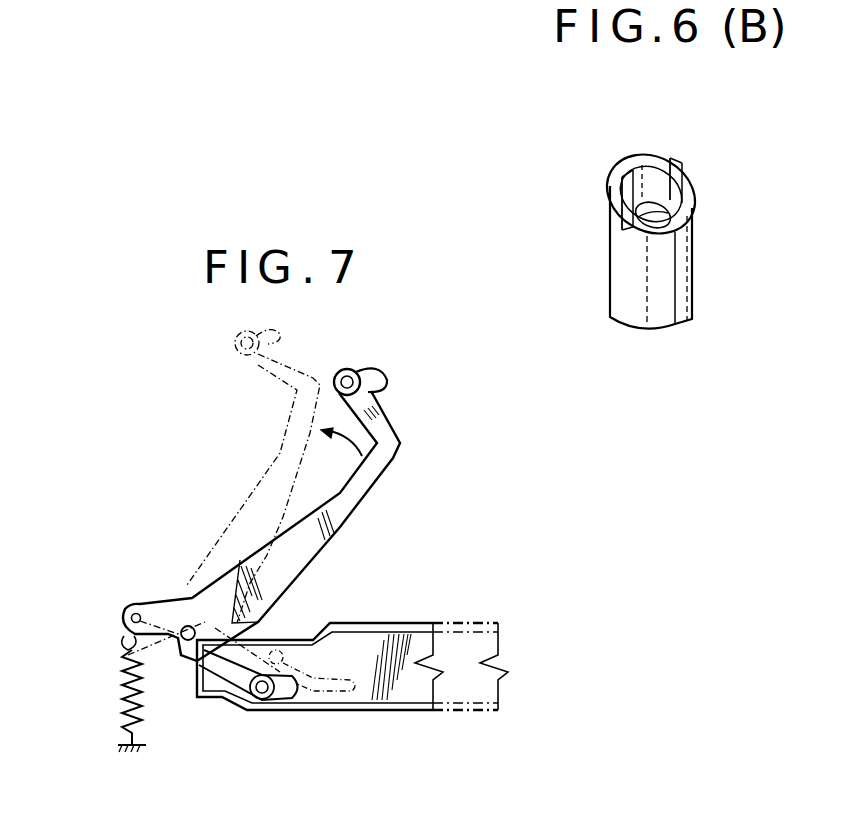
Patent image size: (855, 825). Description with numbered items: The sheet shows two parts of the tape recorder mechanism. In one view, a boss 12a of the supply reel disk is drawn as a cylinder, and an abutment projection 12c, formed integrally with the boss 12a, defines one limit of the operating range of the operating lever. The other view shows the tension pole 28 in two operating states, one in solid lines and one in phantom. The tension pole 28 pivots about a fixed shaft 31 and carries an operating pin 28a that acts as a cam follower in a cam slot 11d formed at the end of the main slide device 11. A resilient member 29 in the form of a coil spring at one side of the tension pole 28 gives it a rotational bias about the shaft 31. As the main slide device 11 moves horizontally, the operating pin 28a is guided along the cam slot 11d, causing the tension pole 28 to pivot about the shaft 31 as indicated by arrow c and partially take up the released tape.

In FIG. 6B, the boss 12a is at (692, 247).
In FIG. 6B, the abutment projection 12c is at (671, 153).
In FIG. 7, the main slide device 11 is at (371, 712).
In FIG. 7, the cam slot 11d is at (284, 693).
In FIG. 7, the tension pole 28 is at (380, 484).
In FIG. 7, the operating pin 28a is at (258, 702).
In FIG. 7, the resilient member 29 is at (120, 695).
In FIG. 7, the fixed shaft 31 is at (186, 626).